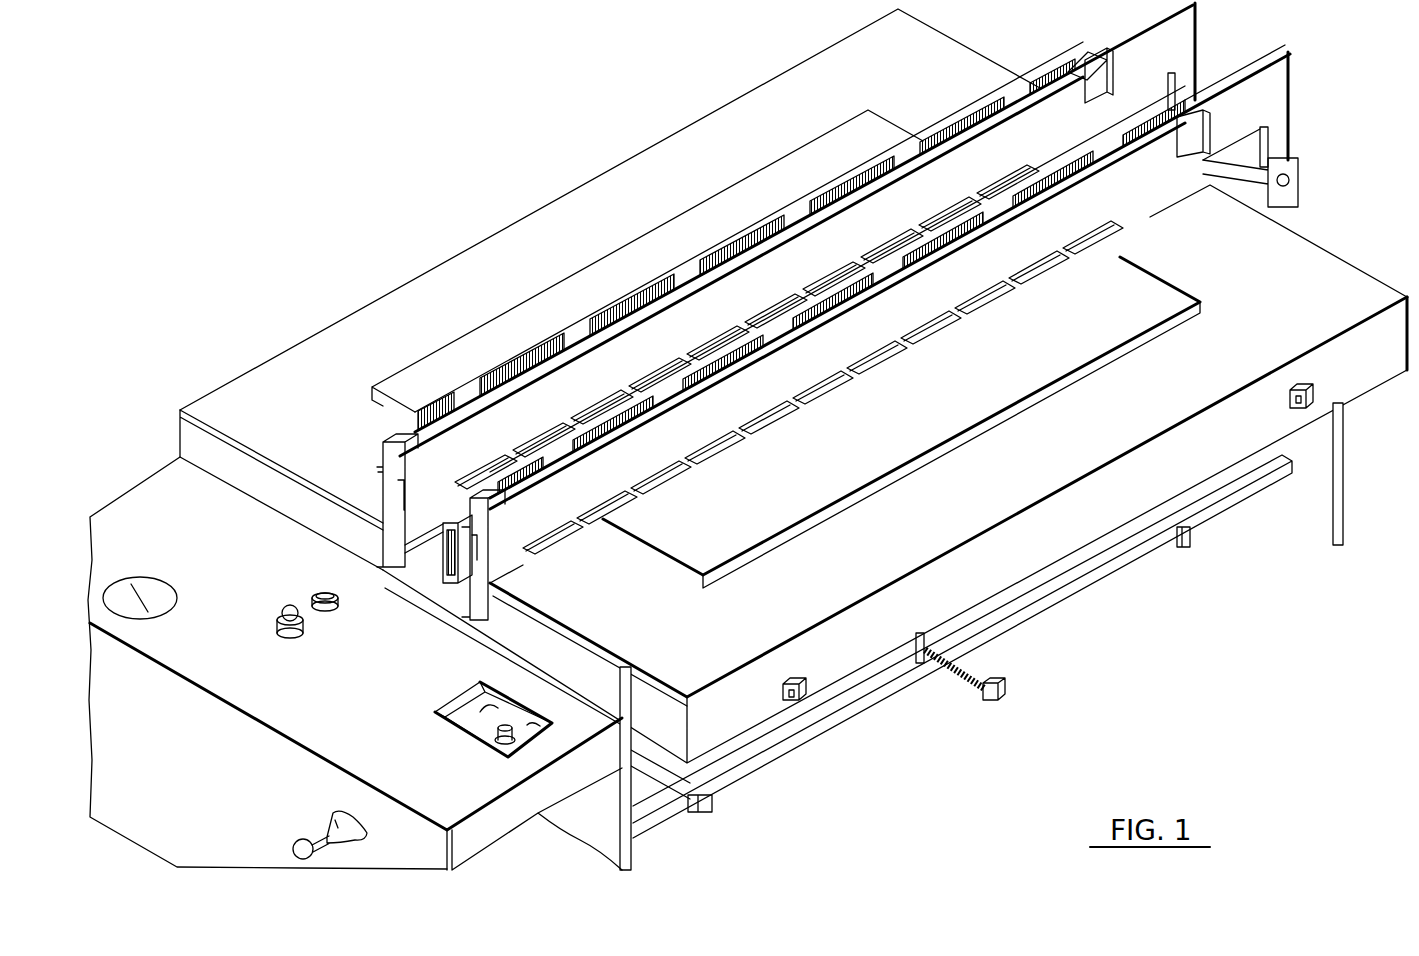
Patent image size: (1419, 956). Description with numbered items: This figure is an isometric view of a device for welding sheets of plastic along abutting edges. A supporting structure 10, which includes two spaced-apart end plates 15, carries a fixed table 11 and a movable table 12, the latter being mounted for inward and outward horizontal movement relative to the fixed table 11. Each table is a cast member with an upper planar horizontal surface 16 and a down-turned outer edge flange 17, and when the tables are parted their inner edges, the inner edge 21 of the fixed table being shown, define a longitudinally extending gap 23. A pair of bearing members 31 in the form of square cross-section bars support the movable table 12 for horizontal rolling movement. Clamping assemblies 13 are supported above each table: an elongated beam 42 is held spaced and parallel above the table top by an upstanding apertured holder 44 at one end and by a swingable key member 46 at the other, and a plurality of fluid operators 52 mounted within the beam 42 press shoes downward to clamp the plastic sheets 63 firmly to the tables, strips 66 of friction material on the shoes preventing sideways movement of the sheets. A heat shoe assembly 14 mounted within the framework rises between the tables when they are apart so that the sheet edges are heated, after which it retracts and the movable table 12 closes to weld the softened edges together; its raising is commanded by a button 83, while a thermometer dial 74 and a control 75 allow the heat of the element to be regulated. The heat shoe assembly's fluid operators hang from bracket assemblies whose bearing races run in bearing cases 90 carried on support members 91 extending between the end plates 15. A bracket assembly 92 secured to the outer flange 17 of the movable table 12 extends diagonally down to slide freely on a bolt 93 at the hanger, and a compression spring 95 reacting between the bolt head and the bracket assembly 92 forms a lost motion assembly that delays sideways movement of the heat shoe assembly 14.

The supporting structure 10 is at (895, 527).
The fixed table 11 is at (752, 102).
The movable table 12 is at (1032, 470).
The clamping assemblies 13 is at (895, 204).
The heat shoe assembly 14 is at (452, 560).
The end plates 15 is at (1338, 506).
The upper planar horizontal surface 16 is at (424, 330).
The outer edge flange 17 is at (1142, 490).
The inner edge 21 is at (430, 551).
The gap 23 is at (422, 582).
The bearing members 31 is at (1305, 400).
The elongated beam 42 is at (736, 298).
The upstanding apertured holder 44 is at (1103, 88).
The key member 46 is at (404, 463).
The fluid operators 52 is at (596, 345).
The plastic sheets 63 is at (738, 200).
The strips 66 is at (668, 498).
The thermometer dial 74 is at (478, 703).
The control 75 is at (497, 742).
The button 83 is at (300, 638).
The bearing cases 90 is at (1185, 548).
The support members 91 is at (1116, 587).
The bracket assembly 92 is at (922, 635).
The bolt 93 is at (990, 701).
The compression spring 95 is at (962, 660).